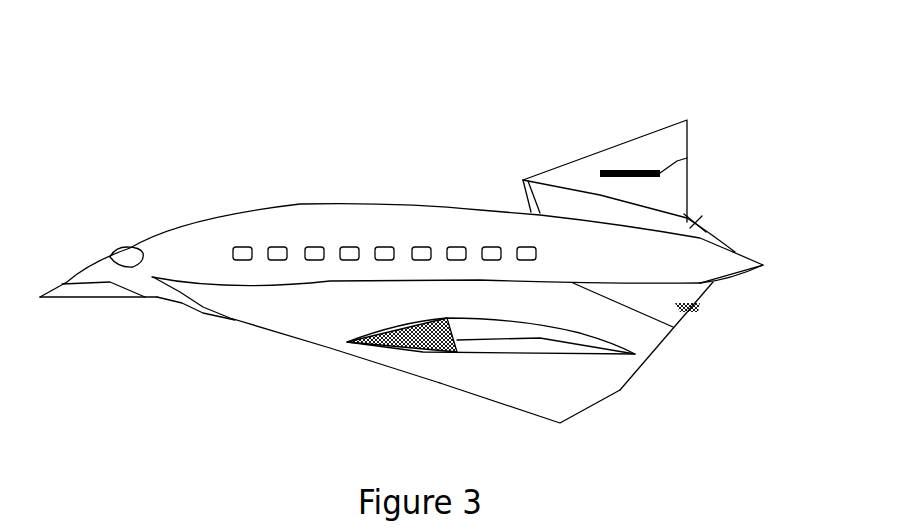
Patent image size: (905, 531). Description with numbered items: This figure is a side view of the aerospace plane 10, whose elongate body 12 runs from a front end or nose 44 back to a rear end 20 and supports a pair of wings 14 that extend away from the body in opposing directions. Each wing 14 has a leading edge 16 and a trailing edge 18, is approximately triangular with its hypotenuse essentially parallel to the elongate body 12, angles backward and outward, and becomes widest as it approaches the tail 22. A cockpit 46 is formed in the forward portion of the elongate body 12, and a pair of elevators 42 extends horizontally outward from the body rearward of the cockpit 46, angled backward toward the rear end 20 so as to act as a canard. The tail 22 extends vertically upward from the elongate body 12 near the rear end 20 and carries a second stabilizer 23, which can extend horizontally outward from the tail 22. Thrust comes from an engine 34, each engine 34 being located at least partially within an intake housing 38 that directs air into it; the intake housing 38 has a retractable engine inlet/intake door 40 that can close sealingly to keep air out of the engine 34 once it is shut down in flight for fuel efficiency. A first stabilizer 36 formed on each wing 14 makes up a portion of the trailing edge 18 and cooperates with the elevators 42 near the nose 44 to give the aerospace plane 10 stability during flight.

The aerospace plane 10 is at (473, 64).
The elongate body 12 is at (313, 213).
The wing 14 is at (595, 395).
The leading edge 16 is at (283, 338).
The trailing edge 18 is at (653, 350).
The rear end 20 is at (727, 257).
The tail 22 is at (663, 140).
The second stabilizer 23 is at (687, 158).
The engine 34 is at (700, 227).
The first stabilizer 36 is at (700, 303).
The intake housing 38 is at (507, 353).
The retractable engine inlet/intake door 40 is at (420, 350).
The elevator 42 is at (160, 300).
The nose 44 is at (68, 284).
The cockpit 46 is at (107, 258).